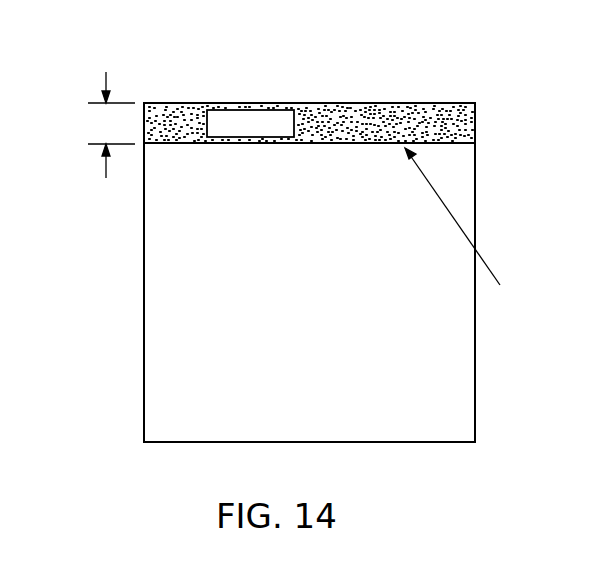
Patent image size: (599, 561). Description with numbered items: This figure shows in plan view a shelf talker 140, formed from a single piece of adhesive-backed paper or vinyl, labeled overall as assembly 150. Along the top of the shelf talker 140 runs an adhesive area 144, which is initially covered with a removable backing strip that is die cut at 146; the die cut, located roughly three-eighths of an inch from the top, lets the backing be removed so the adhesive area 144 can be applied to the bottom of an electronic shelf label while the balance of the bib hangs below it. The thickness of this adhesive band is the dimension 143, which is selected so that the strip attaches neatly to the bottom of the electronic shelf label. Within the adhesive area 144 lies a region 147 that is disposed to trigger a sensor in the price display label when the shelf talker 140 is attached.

The shelf talker 140 is at (152, 365).
The dimension 143 is at (88, 60).
The adhesive area 144 is at (360, 120).
The die cut 146 is at (476, 224).
The region 147 is at (255, 117).
The assembly 150 is at (217, 84).